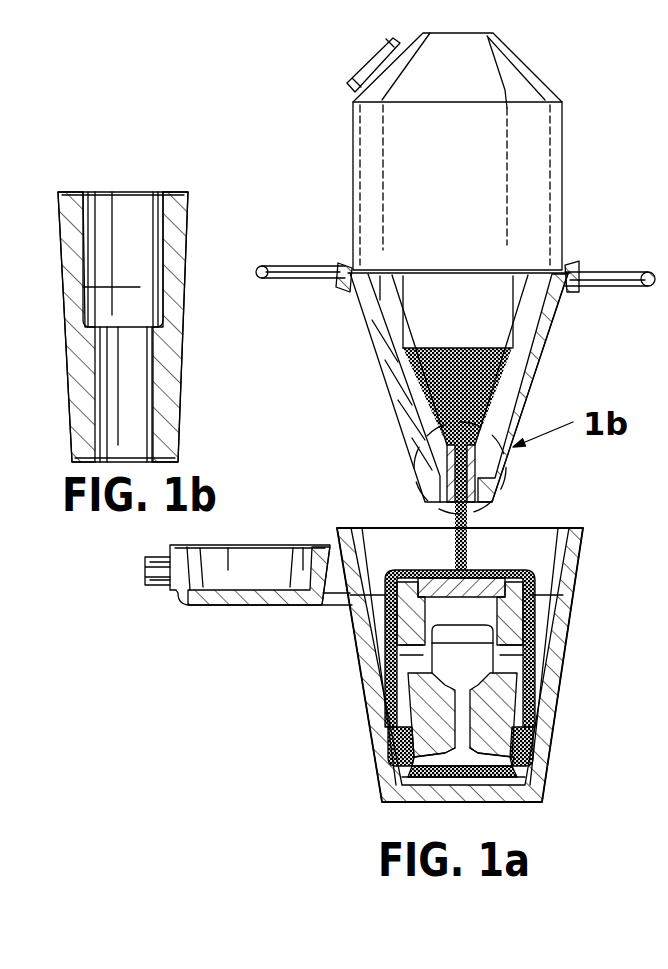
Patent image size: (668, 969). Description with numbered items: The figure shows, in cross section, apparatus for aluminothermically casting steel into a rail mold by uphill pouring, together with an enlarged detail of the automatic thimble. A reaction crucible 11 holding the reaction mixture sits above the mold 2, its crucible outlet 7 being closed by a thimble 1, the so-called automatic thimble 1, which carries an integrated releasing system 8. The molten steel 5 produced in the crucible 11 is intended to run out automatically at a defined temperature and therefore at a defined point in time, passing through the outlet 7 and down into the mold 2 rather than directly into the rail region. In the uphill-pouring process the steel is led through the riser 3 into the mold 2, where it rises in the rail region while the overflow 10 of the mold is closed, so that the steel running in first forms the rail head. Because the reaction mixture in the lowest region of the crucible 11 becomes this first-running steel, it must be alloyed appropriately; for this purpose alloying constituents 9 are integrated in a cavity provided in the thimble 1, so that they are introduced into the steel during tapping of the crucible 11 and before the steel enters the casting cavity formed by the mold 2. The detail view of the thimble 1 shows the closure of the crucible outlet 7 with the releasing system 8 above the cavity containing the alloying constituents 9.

In FIG. 1A, the reaction crucible 11 is at (572, 167).
In FIG. 1A, the automatic thimble 1 is at (535, 342).
In FIG. 1A, the molten steel 5 is at (440, 388).
In FIG. 1A, the crucible outlet 7 is at (445, 477).
In FIG. 1B, the crucible outlet 7 is at (177, 215).
In FIG. 1A, the riser 3 is at (368, 655).
In FIG. 1A, the mold 2 is at (377, 748).
In FIG. 1A, the overflow 10 is at (505, 663).
In FIG. 1B, the integrated releasing system 8 is at (137, 308).
In FIG. 1B, the alloying constituents 9 is at (132, 392).